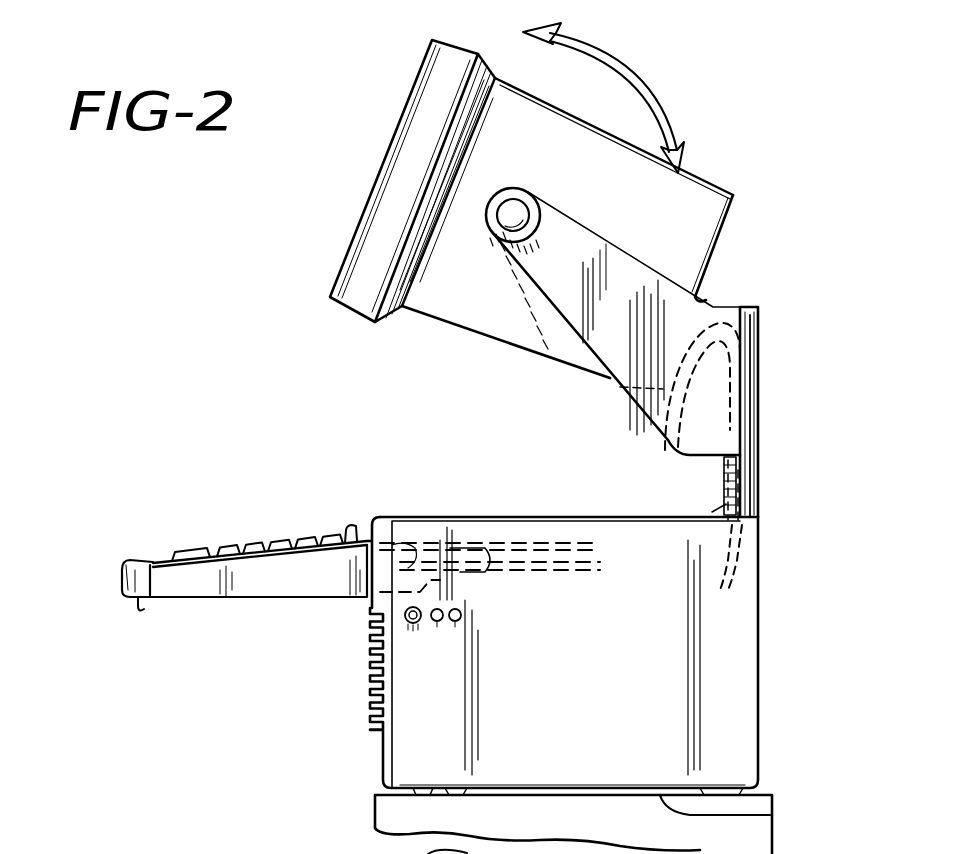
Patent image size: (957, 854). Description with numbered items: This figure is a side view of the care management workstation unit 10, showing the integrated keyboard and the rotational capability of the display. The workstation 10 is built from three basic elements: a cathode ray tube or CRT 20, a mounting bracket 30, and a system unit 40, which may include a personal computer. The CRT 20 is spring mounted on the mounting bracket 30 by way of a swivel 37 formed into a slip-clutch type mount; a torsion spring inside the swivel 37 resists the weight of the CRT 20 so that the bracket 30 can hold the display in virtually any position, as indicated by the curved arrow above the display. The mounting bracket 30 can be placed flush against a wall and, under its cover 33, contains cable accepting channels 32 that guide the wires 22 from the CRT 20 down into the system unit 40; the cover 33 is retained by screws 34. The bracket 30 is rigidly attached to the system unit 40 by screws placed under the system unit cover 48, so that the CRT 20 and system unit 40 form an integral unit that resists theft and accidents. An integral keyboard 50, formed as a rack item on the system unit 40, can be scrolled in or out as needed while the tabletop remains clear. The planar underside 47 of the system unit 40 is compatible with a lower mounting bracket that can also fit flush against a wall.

The care management workstation unit 10 is at (232, 288).
The cathode ray tube 20 is at (473, 326).
The wires 22 is at (677, 453).
The mounting bracket 30 is at (758, 322).
The cable accepting channels 32 is at (720, 480).
The cover 33 is at (720, 508).
The screws 34 is at (730, 530).
The swivel 37 is at (521, 190).
The system unit 40 is at (425, 743).
The underside 47 is at (772, 818).
The system unit cover 48 is at (370, 697).
The integral keyboard 50 is at (290, 540).